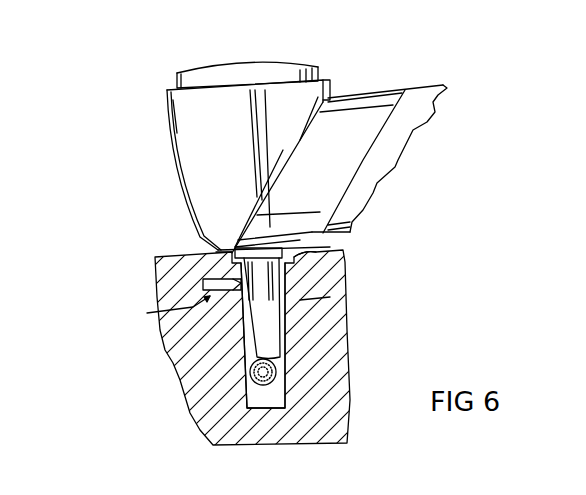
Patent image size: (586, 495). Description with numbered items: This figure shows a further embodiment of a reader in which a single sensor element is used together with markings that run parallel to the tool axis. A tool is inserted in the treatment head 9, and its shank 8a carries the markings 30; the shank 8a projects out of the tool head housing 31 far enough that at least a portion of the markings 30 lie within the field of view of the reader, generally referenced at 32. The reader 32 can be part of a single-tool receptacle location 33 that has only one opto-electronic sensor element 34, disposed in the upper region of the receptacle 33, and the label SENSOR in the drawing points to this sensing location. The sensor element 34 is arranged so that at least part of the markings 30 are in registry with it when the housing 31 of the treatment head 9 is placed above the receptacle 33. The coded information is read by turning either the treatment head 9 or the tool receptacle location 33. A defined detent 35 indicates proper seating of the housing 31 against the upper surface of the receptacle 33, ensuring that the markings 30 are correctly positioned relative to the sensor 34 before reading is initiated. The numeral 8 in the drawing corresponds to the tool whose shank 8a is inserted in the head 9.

The treatment head 9 is at (300, 105).
The tool head housing 31 is at (202, 182).
The opto-electronic sensor element 34 is at (203, 253).
The defined detent 35 is at (315, 250).
The markings 30 is at (333, 260).
The shank 8a is at (333, 277).
The single-tool receptacle location 33 is at (330, 297).
The pin 8 is at (268, 338).
The reader 32 is at (168, 310).
The sensor SENSOR is at (203, 280).